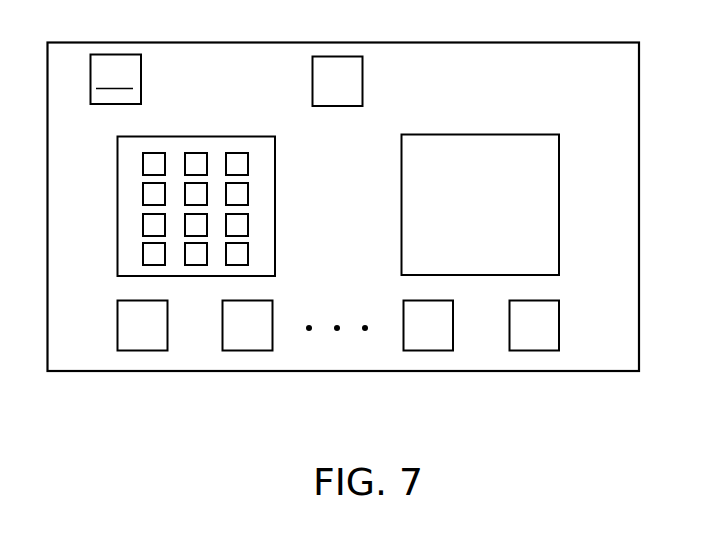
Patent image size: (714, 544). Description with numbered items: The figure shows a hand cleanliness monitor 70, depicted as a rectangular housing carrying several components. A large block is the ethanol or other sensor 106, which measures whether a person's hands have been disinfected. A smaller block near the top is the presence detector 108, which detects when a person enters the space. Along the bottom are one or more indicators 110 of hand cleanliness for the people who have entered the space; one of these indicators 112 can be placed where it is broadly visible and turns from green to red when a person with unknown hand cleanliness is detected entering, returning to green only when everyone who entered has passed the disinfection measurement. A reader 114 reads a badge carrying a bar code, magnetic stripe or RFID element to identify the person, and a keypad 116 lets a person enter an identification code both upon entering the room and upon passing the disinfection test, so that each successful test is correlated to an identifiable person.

The hand cleanliness monitor 70 is at (640, 248).
The ethanol or other sensor 106 is at (560, 175).
The presence detector 108 is at (363, 90).
The indicators of hand cleanliness 110 is at (144, 351).
The indicator 112 is at (435, 352).
The reader 114 is at (116, 80).
The keypad 116 is at (276, 245).